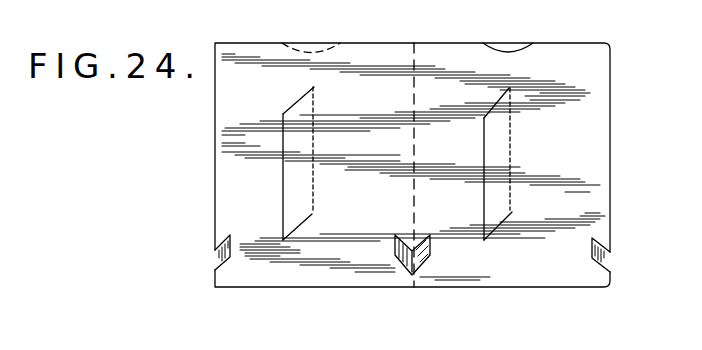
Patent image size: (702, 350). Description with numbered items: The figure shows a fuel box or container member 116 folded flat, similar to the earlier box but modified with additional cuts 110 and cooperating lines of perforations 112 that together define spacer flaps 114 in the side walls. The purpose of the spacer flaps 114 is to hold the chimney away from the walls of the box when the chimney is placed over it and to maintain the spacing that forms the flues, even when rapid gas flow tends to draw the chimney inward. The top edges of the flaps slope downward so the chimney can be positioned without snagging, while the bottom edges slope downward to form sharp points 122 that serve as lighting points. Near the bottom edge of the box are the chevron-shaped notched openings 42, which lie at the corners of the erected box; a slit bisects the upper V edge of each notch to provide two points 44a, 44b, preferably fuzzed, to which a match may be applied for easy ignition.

The fuel box or container member 116 is at (212, 103).
The cuts 110 is at (283, 176).
The lines of perforations 112 is at (316, 147).
The spacer flaps 114 is at (298, 190).
The sharp points 122 is at (283, 240).
The notched openings 42 is at (213, 261).
The point 44a is at (395, 253).
The point 44b is at (425, 253).